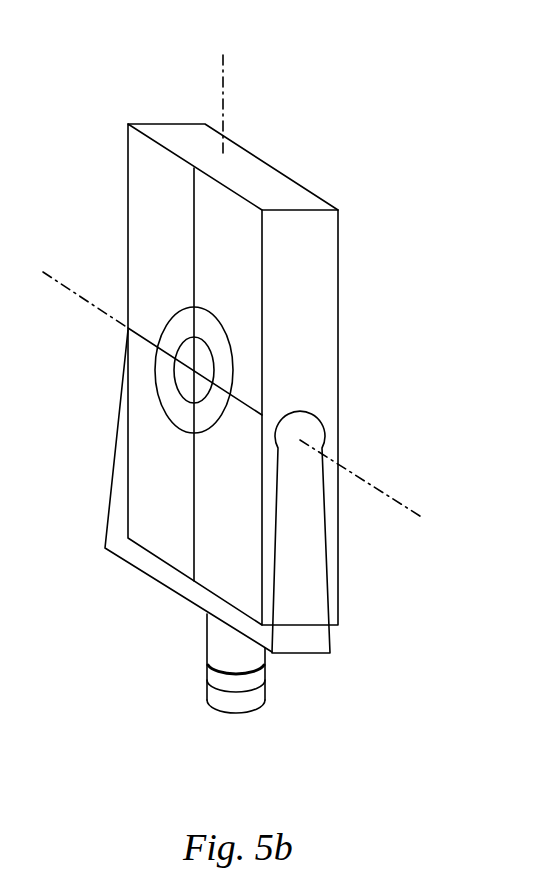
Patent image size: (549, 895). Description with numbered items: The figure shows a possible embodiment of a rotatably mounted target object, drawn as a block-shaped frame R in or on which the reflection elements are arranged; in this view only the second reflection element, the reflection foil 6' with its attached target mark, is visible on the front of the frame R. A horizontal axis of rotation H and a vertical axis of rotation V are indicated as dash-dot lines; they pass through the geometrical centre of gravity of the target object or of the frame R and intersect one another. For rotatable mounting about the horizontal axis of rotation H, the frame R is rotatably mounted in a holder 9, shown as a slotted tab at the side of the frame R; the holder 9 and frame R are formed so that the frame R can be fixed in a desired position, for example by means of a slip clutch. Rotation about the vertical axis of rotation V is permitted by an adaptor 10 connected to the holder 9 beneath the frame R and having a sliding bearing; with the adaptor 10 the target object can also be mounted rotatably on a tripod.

The reflection foil 6' is at (188, 388).
The holder 9 is at (318, 601).
The adaptor 10 is at (212, 693).
The frame R is at (191, 142).
The vertical axis of rotation V is at (223, 89).
The horizontal axis of rotation H is at (250, 407).